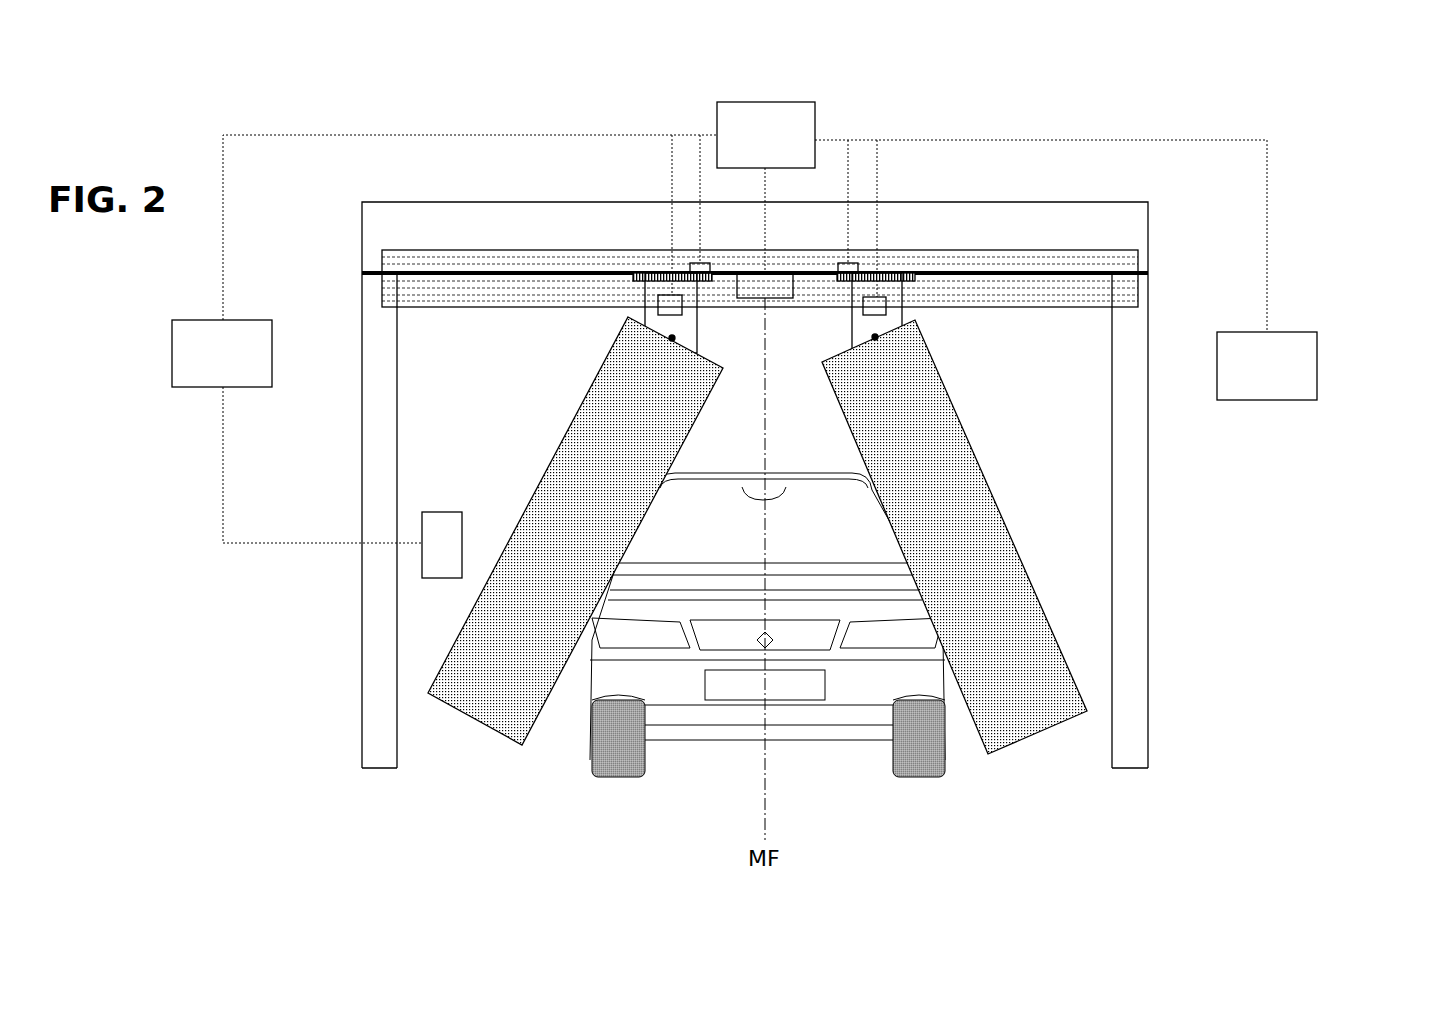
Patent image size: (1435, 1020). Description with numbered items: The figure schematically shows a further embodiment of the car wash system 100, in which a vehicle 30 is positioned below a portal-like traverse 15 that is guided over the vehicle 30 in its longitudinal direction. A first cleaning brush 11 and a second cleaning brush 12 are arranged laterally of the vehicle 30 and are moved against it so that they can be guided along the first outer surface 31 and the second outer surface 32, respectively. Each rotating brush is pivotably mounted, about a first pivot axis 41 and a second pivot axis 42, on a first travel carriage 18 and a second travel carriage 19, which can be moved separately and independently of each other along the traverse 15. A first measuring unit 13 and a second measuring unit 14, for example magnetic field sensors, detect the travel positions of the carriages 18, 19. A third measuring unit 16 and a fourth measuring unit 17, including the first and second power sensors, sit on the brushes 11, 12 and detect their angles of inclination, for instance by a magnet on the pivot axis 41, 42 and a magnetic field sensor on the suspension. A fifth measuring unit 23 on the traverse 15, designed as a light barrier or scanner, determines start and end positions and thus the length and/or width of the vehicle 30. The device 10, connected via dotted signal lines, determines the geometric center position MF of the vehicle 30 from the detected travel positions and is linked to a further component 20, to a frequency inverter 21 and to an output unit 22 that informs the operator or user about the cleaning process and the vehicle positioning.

The device 10 is at (815, 118).
The first cleaning brush 11 is at (558, 440).
The second cleaning brush 12 is at (970, 428).
The first measuring unit 13 is at (700, 263).
The second measuring unit 14 is at (853, 263).
The traverse 15 is at (923, 200).
The third measuring unit 16 is at (628, 317).
The fourth measuring unit 17 is at (886, 305).
The first travel carriage 18 is at (632, 274).
The second travel carriage 19 is at (953, 272).
The component 20 is at (420, 566).
The frequency inverter 21 is at (172, 338).
The output unit 22 is at (1317, 366).
The fifth measuring unit 23 is at (782, 265).
The vehicle 30 is at (833, 742).
The first outer surface 31 is at (583, 657).
The second outer surface 32 is at (950, 718).
The first pivot axis 41 is at (672, 338).
The second pivot axis 42 is at (875, 337).
The car wash system 100 is at (1200, 220).